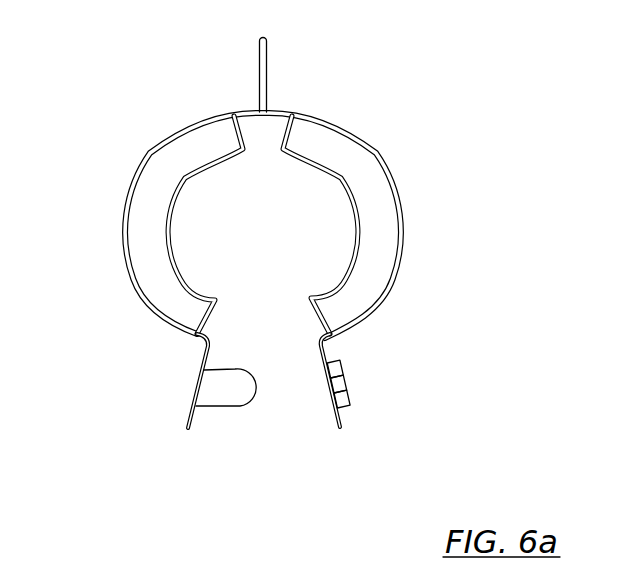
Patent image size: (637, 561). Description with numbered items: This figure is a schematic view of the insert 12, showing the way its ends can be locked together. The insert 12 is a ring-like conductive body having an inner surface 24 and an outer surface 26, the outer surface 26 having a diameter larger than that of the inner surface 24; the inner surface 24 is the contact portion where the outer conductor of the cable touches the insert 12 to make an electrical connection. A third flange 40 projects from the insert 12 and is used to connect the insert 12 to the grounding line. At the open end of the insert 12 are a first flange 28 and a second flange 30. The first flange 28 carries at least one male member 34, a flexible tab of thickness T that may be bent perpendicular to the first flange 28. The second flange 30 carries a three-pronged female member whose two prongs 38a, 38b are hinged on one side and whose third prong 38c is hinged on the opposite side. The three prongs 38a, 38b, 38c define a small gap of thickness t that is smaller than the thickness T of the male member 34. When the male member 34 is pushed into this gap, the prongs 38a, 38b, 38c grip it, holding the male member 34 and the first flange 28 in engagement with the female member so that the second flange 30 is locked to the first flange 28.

The insert 12 is at (260, 248).
The inner surface 24 is at (354, 197).
The outer surface 26 is at (123, 210).
The first flange 28 is at (204, 358).
The second flange 30 is at (343, 422).
The male member 34 is at (232, 398).
The prong 38a is at (341, 361).
The prong 38b is at (349, 398).
The third prong 38c is at (346, 381).
The third flange 40 is at (258, 59).